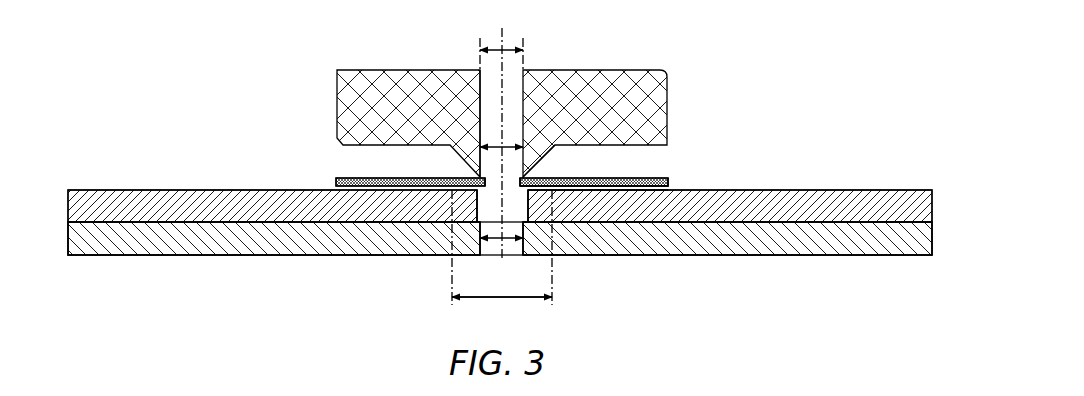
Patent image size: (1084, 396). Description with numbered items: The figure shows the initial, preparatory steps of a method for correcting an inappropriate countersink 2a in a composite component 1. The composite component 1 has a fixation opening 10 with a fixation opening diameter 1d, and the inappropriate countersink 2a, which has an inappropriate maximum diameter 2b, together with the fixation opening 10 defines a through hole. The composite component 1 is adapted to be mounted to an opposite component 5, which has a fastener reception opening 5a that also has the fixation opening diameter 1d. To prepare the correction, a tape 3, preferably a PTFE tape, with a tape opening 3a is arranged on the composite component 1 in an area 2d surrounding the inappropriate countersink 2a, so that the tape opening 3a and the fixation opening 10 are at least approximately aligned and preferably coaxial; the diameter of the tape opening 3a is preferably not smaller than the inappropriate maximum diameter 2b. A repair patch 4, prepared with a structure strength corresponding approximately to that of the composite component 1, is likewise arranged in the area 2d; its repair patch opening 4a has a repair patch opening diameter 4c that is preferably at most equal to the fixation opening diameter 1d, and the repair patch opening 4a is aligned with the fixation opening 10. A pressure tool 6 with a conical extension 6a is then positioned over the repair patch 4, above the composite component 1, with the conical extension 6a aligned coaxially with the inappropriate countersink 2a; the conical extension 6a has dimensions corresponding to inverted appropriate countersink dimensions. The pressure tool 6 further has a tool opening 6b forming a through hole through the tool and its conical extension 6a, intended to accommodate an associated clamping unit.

The composite component 1 is at (891, 172).
The fixation opening diameter 1d is at (516, 48).
The inappropriate countersink 2a is at (478, 197).
The inappropriate maximum diameter 2b is at (500, 298).
The area surrounding the inappropriate countersink 2d is at (598, 195).
The tape 3 is at (652, 187).
The tape opening 3a is at (541, 193).
The repair patch 4 is at (352, 177).
The repair patch opening 4a is at (513, 174).
The repair patch opening diameter 4c is at (506, 140).
The opposite component 5 is at (132, 262).
The fastener reception opening 5a is at (476, 242).
The pressure tool 6 is at (343, 78).
The conical extension 6a is at (541, 170).
The tool opening 6b is at (485, 92).
The fixation opening 10 is at (476, 215).